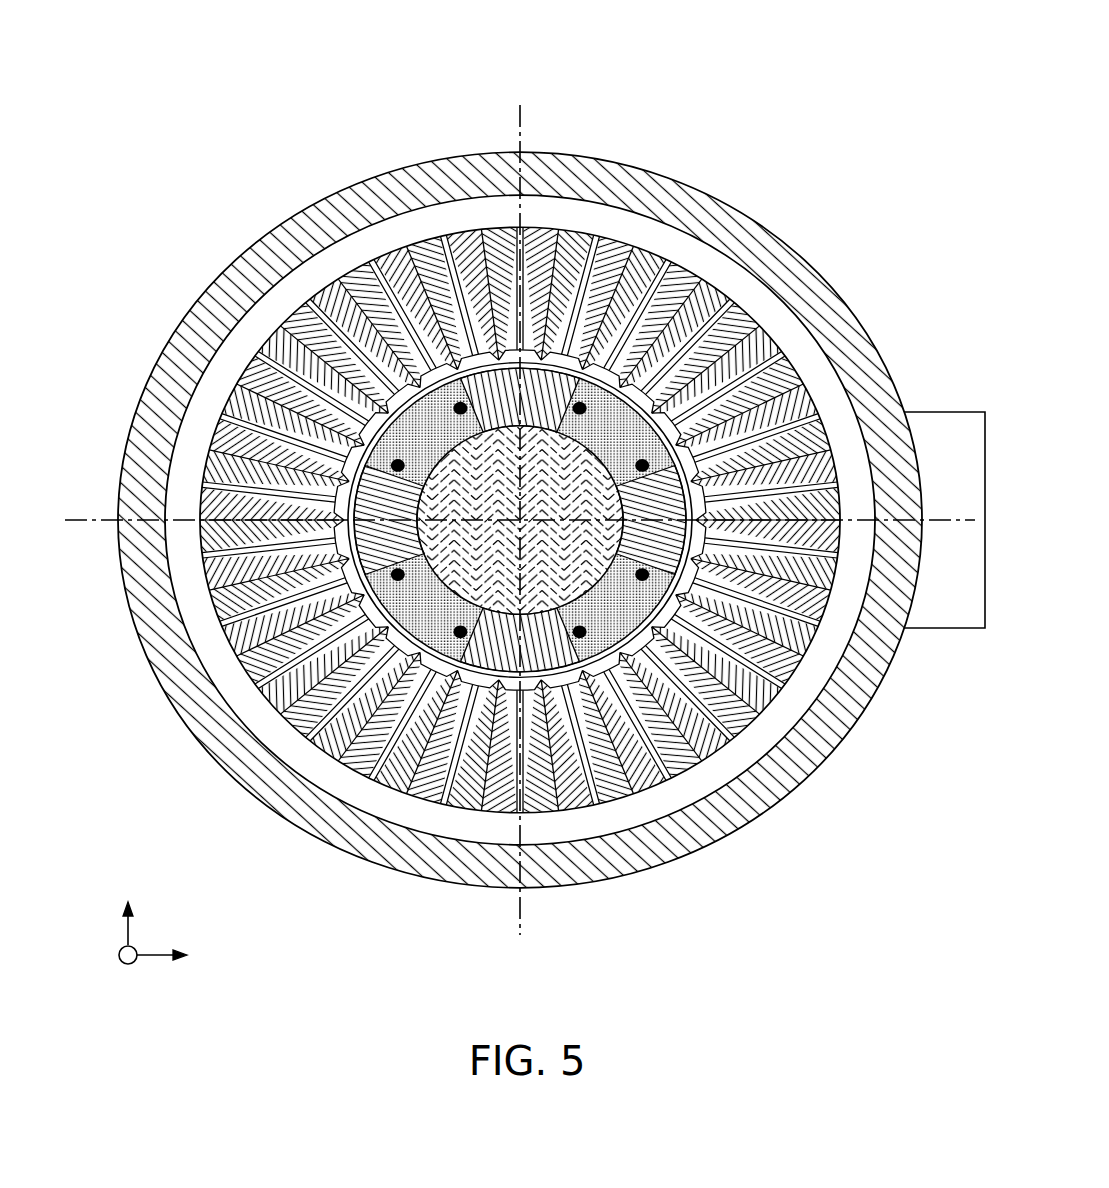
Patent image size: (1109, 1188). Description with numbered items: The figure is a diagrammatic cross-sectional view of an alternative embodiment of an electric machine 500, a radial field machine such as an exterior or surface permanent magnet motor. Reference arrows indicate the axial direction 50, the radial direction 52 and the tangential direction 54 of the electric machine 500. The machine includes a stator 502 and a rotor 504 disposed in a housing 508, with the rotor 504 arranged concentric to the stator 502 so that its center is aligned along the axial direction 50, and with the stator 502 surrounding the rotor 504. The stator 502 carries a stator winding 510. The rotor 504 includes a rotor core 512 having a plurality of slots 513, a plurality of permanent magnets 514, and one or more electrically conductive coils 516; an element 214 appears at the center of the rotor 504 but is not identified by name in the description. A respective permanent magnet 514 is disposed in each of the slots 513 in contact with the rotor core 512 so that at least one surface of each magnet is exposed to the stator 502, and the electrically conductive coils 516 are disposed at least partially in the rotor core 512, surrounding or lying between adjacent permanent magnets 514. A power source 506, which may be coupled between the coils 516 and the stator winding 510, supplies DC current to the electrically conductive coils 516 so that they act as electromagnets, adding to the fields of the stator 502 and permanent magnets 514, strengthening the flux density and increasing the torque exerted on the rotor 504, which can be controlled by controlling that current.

The electric machine 500 is at (790, 47).
The stator 502 is at (402, 224).
The rotor 504 is at (673, 606).
The power source 506 is at (963, 423).
The housing 508 is at (740, 836).
The stator winding 510 is at (742, 320).
The rotor core 512 is at (776, 672).
The slots 513 is at (668, 472).
The permanent magnets 514 is at (378, 562).
The electrically conductive coils 516 is at (482, 800).
The shaft 214 is at (536, 490).
The axial direction 50 is at (120, 967).
The radial direction 52 is at (153, 957).
The tangential direction 54 is at (130, 921).